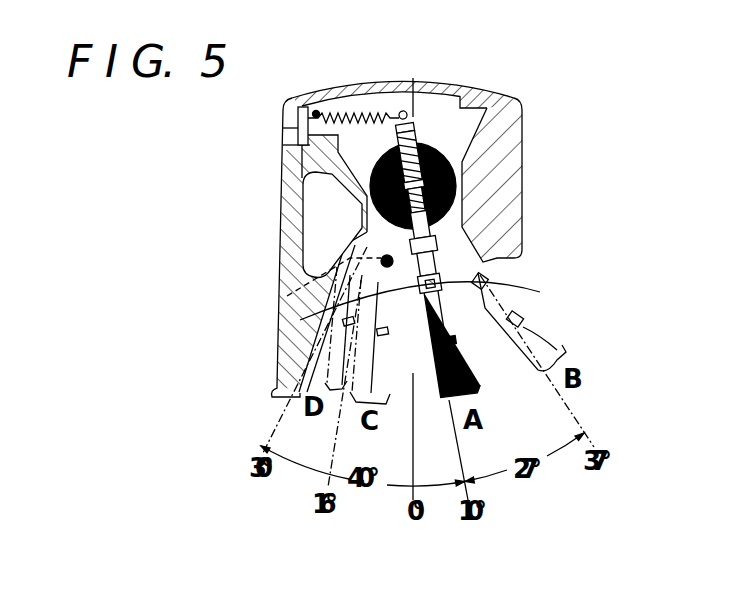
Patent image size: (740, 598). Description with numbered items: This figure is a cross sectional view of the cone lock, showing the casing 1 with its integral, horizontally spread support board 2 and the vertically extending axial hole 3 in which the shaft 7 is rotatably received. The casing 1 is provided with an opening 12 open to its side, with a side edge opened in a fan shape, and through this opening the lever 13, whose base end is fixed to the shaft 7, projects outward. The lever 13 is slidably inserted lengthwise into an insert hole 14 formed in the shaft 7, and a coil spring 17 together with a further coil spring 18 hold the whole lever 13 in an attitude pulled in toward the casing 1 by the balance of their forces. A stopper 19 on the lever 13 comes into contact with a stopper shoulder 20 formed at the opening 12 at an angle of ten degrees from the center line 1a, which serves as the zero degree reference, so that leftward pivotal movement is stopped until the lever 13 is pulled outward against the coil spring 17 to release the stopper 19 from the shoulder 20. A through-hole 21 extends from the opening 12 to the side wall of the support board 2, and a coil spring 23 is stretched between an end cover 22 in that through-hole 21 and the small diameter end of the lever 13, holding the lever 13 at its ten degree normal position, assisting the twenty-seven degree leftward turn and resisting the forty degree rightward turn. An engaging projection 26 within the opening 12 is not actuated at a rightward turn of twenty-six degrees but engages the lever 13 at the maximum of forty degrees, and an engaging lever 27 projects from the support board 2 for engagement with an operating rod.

The casing 1 is at (381, 82).
The center line 1a is at (412, 442).
The support board 2 is at (300, 218).
The axial hole 3 is at (447, 158).
The shaft 7 is at (372, 190).
The opening 12 is at (357, 240).
The lever 13 is at (460, 341).
The insert hole 14 is at (498, 235).
The coil spring 17 is at (445, 110).
The coil spring 18 is at (499, 199).
The stopper 19 is at (300, 320).
The stopper shoulder 20 is at (502, 291).
The through-hole 21 is at (314, 111).
The end cover 22 is at (296, 128).
The coil spring 23 is at (355, 108).
The engaging projection 26 is at (287, 296).
The engaging lever 27 is at (292, 357).